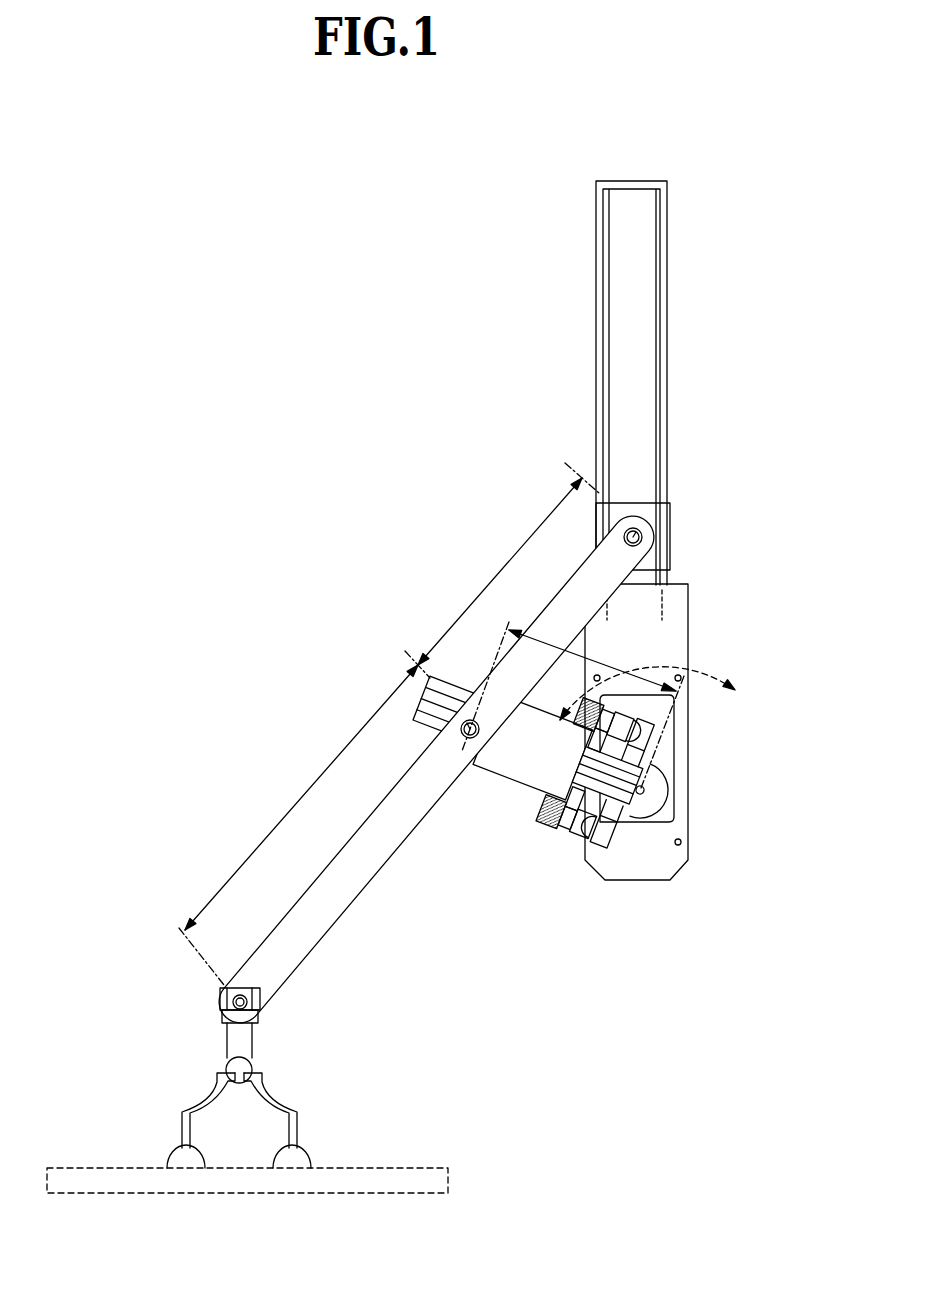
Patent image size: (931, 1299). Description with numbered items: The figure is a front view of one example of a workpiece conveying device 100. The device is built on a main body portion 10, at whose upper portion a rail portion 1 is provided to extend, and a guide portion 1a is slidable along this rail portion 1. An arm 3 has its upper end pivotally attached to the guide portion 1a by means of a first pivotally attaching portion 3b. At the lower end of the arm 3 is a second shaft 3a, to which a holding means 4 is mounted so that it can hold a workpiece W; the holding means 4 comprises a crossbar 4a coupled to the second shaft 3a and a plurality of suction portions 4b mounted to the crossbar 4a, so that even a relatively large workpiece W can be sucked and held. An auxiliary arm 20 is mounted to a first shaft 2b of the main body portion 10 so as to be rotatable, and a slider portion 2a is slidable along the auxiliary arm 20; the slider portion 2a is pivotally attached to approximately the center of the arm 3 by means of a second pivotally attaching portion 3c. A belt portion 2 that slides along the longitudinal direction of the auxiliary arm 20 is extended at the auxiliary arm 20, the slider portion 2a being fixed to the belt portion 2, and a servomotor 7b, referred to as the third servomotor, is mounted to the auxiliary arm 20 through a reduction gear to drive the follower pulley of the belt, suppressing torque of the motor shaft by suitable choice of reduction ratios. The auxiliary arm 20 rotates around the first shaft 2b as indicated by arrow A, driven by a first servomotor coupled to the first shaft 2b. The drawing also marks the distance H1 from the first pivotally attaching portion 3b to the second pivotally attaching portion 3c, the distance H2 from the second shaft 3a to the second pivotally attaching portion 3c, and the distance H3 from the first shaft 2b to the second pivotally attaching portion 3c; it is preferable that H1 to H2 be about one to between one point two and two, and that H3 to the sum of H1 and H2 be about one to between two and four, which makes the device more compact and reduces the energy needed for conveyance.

The workpiece conveying device 100 is at (328, 378).
The rail portion 1 is at (600, 307).
The guide portion 1a is at (662, 510).
The belt portion 2 is at (626, 815).
The slider portion 2a is at (500, 765).
The first shaft 2b is at (645, 791).
The arm 3 is at (346, 898).
The second shaft 3a is at (262, 1003).
The first pivotally attaching portion 3b is at (645, 536).
The second pivotally attaching portion 3c is at (479, 731).
The holding means 4 is at (338, 1083).
The crossbar 4a is at (246, 1066).
The suction portions 4b is at (300, 1156).
The servomotor (third servomotor) 7b is at (563, 833).
The main body portion 10 is at (670, 650).
The auxiliary arm 20 is at (512, 816).
The workpiece W is at (436, 1168).
The distance H1 is at (502, 570).
The distance H2 is at (298, 825).
The distance H3 is at (573, 702).
The arrow A is at (647, 682).